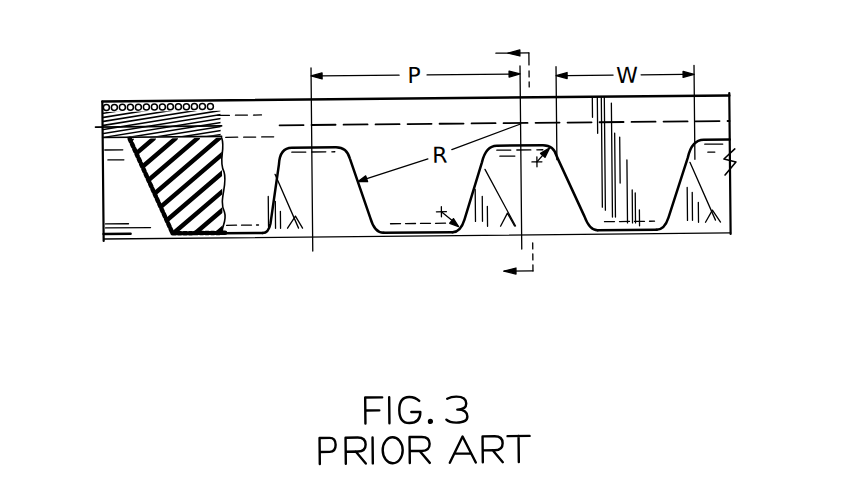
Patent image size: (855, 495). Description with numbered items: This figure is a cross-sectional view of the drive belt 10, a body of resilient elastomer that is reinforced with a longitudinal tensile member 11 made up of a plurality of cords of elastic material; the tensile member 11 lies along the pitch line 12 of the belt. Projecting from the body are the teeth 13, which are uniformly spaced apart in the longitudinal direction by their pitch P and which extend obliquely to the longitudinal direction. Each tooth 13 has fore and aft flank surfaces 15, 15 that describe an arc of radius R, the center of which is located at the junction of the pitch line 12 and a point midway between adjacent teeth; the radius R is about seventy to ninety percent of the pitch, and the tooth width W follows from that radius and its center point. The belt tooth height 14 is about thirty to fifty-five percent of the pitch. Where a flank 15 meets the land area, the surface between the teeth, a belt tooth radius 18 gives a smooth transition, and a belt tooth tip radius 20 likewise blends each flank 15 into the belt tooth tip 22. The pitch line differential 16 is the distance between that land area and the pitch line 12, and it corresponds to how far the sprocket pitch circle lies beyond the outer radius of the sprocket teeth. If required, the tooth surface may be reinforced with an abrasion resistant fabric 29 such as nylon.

The drive belt 10 is at (236, 258).
The longitudinal tensile member 11 is at (98, 115).
The pitch line 12 is at (279, 124).
The teeth 13 is at (606, 235).
The belt tooth height 14 is at (300, 154).
The flank surfaces 15 is at (570, 186).
The pitch line differential 16 is at (327, 89).
The belt tooth radius 18 is at (537, 163).
The belt tooth tip radius 20 is at (441, 217).
The belt tooth tip 22 is at (403, 236).
The abrasion resistant fabric 29 is at (149, 199).